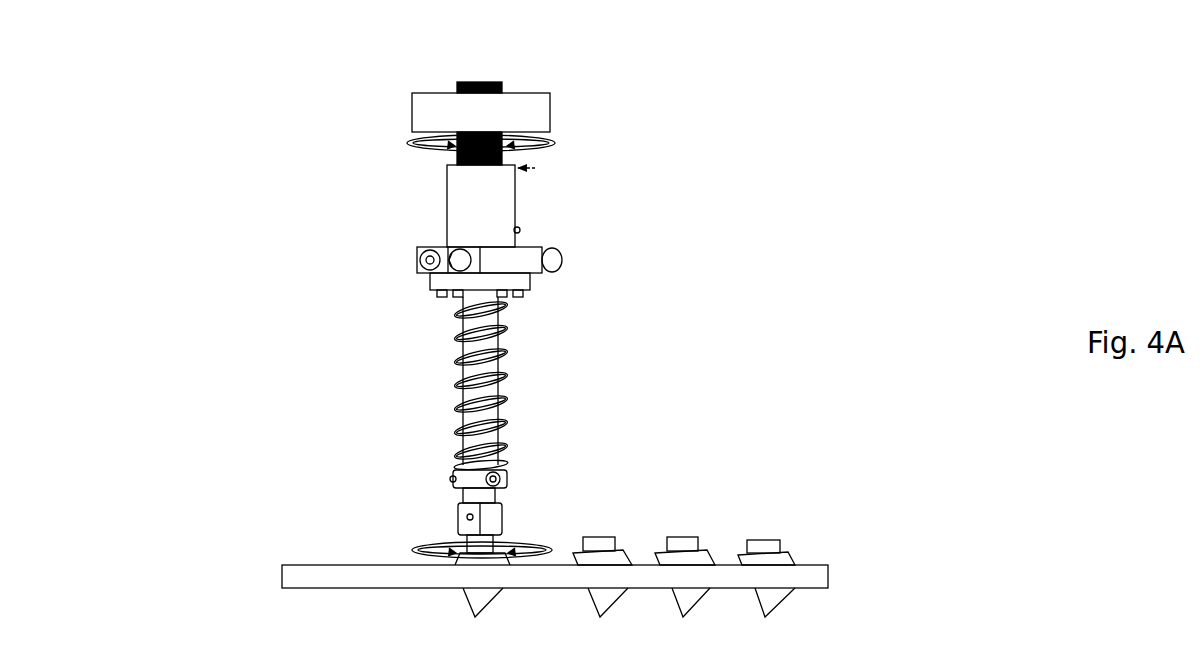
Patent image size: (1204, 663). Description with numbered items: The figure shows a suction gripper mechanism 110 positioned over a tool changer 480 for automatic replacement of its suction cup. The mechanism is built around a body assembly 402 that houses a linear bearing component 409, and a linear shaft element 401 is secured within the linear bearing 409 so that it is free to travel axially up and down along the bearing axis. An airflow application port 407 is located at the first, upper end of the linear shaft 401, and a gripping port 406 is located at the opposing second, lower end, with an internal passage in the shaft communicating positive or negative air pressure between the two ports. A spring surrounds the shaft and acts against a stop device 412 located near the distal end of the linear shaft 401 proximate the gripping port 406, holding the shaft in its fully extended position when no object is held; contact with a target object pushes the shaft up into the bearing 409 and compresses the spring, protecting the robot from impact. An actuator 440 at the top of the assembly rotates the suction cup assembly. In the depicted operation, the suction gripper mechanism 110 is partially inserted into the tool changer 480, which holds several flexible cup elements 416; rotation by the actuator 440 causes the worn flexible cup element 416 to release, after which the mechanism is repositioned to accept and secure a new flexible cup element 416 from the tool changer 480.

The suction gripper mechanism 110 is at (203, 241).
The airflow application port 407 is at (502, 85).
The actuator 440 is at (412, 118).
The linear bearing component 409 is at (553, 170).
The body assembly 402 is at (447, 205).
The linear shaft element 401 is at (462, 389).
The stop device 412 is at (510, 480).
The gripping port 406 is at (460, 516).
The tool changer 480 is at (828, 573).
The flexible cup element 416 is at (494, 600).